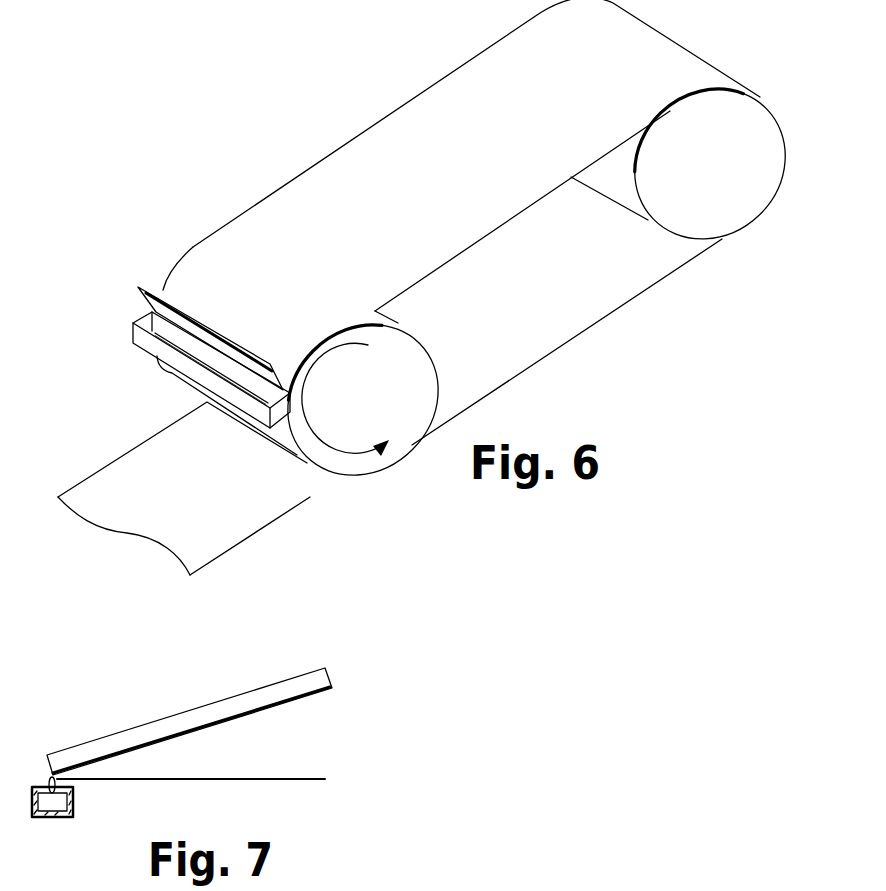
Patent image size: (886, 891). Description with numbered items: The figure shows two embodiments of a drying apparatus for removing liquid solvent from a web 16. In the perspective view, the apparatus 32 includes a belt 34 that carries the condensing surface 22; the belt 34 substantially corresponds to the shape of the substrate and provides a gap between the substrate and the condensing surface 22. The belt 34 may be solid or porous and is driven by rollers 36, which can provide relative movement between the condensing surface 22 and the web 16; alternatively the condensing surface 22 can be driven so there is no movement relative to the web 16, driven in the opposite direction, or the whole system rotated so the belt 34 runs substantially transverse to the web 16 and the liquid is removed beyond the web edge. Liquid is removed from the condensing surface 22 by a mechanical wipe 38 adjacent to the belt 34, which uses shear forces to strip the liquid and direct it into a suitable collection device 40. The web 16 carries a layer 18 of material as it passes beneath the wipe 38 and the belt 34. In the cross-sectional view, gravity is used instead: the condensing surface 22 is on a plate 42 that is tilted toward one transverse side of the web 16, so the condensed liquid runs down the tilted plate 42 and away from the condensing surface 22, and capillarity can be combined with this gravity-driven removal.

In FIG. 6, the web 16 is at (122, 478).
In FIG. 7, the web 16 is at (182, 780).
In FIG. 6, the coating layer on web 18 is at (177, 452).
In FIG. 7, the condensing surface 22 is at (262, 713).
In FIG. 6, the apparatus 32 is at (489, 253).
In FIG. 6, the belt 34 is at (430, 115).
In FIG. 6, the rollers 36 is at (665, 205).
In FIG. 6, the mechanical wipe 38 is at (156, 290).
In FIG. 6, the collection device 40 is at (143, 340).
In FIG. 7, the plate 42 is at (162, 723).